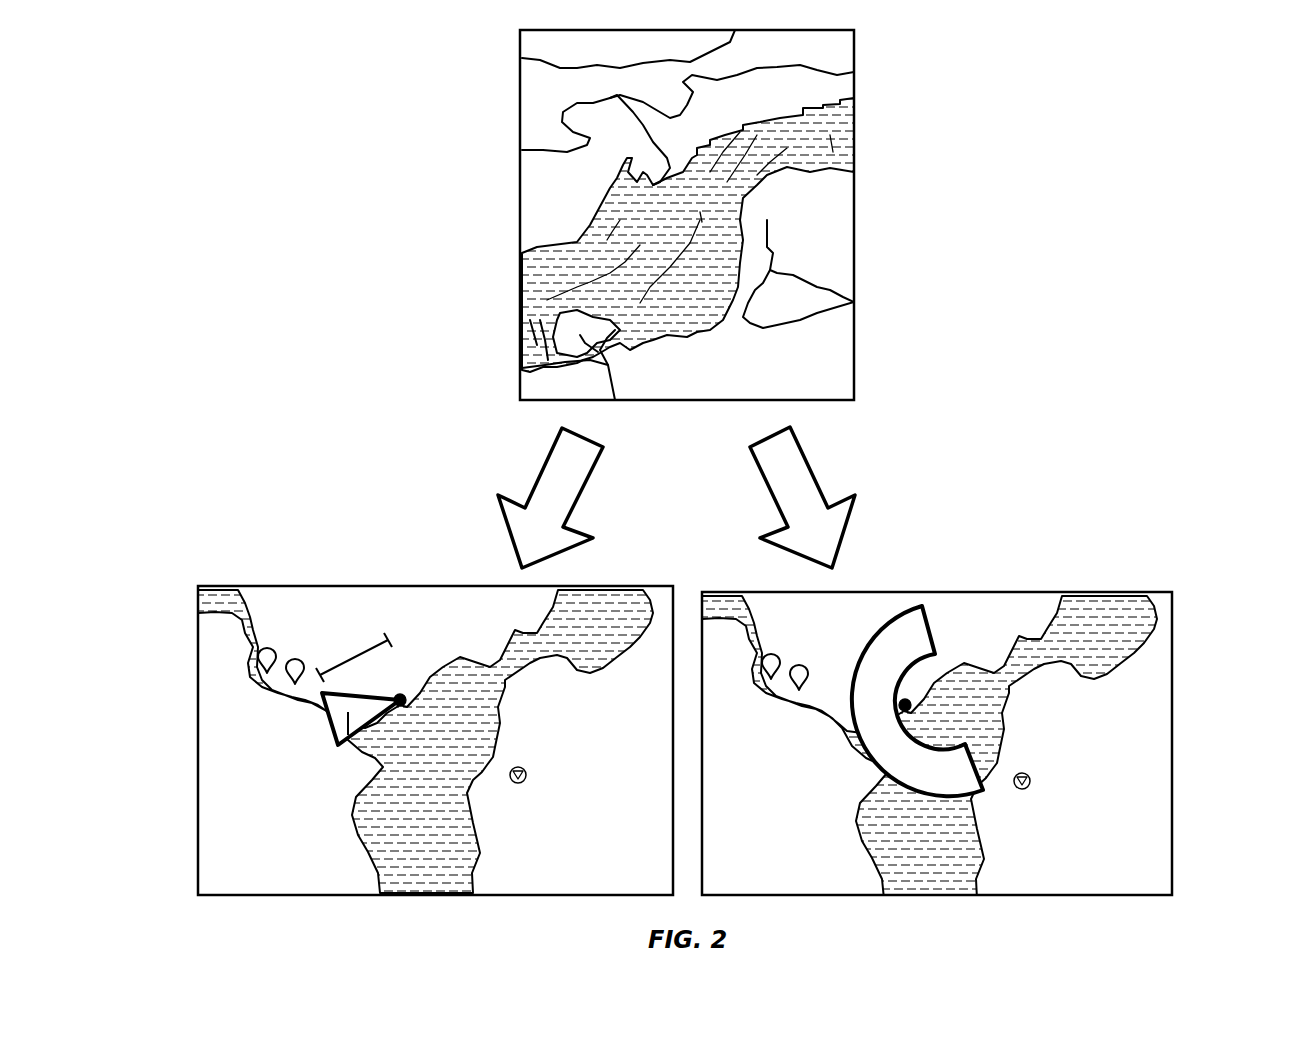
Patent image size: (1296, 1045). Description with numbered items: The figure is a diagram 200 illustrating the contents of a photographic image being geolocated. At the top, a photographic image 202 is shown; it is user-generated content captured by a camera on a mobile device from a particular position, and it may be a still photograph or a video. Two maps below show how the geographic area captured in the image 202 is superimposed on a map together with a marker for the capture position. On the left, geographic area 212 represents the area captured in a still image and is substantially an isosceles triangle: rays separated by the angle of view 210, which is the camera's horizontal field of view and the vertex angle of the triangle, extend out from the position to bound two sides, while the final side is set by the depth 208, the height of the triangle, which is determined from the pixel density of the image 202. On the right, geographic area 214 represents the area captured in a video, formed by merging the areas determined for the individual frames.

The diagram 200 is at (1148, 77).
The photographic image 202 is at (858, 200).
The depth 208 is at (360, 656).
The angle of view 210 is at (370, 732).
The geographic area 212 is at (348, 713).
The geographic area 214 is at (912, 797).